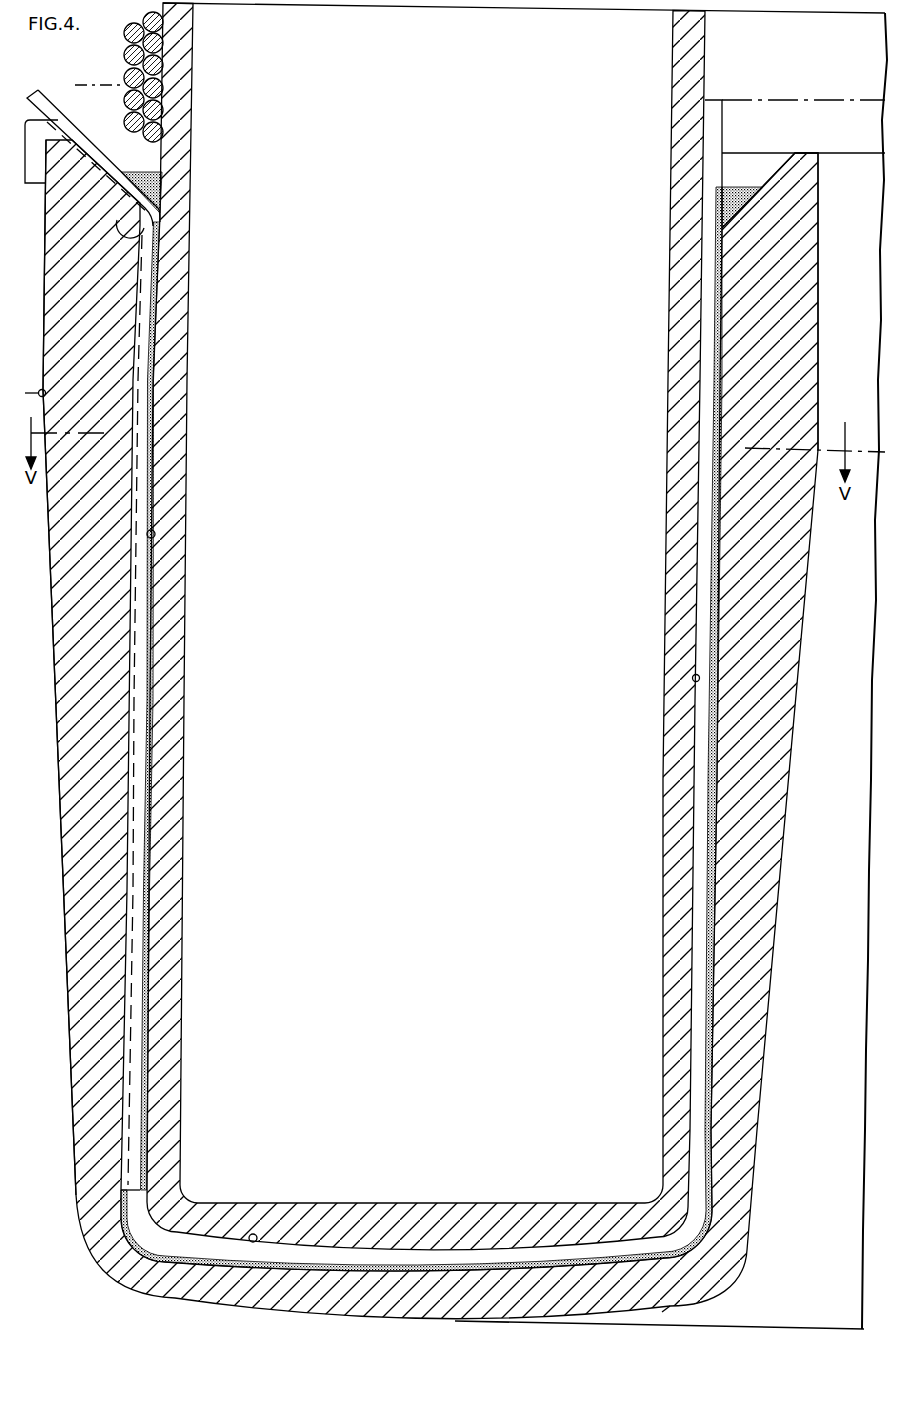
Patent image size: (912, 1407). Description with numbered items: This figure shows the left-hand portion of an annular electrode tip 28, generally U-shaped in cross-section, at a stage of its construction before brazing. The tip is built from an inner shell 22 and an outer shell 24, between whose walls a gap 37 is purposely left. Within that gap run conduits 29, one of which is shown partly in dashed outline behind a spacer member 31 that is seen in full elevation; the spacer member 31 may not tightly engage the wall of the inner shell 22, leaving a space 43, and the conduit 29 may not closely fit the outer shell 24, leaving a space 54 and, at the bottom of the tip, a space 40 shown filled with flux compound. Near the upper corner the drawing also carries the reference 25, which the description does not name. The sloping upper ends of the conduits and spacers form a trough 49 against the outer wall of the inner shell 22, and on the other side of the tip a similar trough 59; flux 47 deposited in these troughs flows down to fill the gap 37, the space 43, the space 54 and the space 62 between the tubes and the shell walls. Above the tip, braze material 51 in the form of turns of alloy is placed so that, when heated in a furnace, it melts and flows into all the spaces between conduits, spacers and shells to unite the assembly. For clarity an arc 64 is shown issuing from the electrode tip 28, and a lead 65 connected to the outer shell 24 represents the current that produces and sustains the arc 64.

The inner shell 22 is at (186, 499).
The outer shell 24 is at (57, 665).
The weld 25 is at (142, 238).
The electrode tip 28 is at (773, 1020).
The conduit 29 is at (147, 661).
The spacer member 31 is at (38, 184).
The gap 37 is at (156, 536).
The space at the bottom of the tip 40 is at (323, 1262).
The space 43 is at (157, 606).
The flux 47 is at (148, 172).
The trough 49 is at (82, 98).
The braze material 51 is at (146, 13).
The space 54 is at (133, 583).
The trough 59 is at (777, 168).
The space 62 is at (713, 720).
The arc 64 is at (688, 1312).
The lead 65 is at (38, 389).